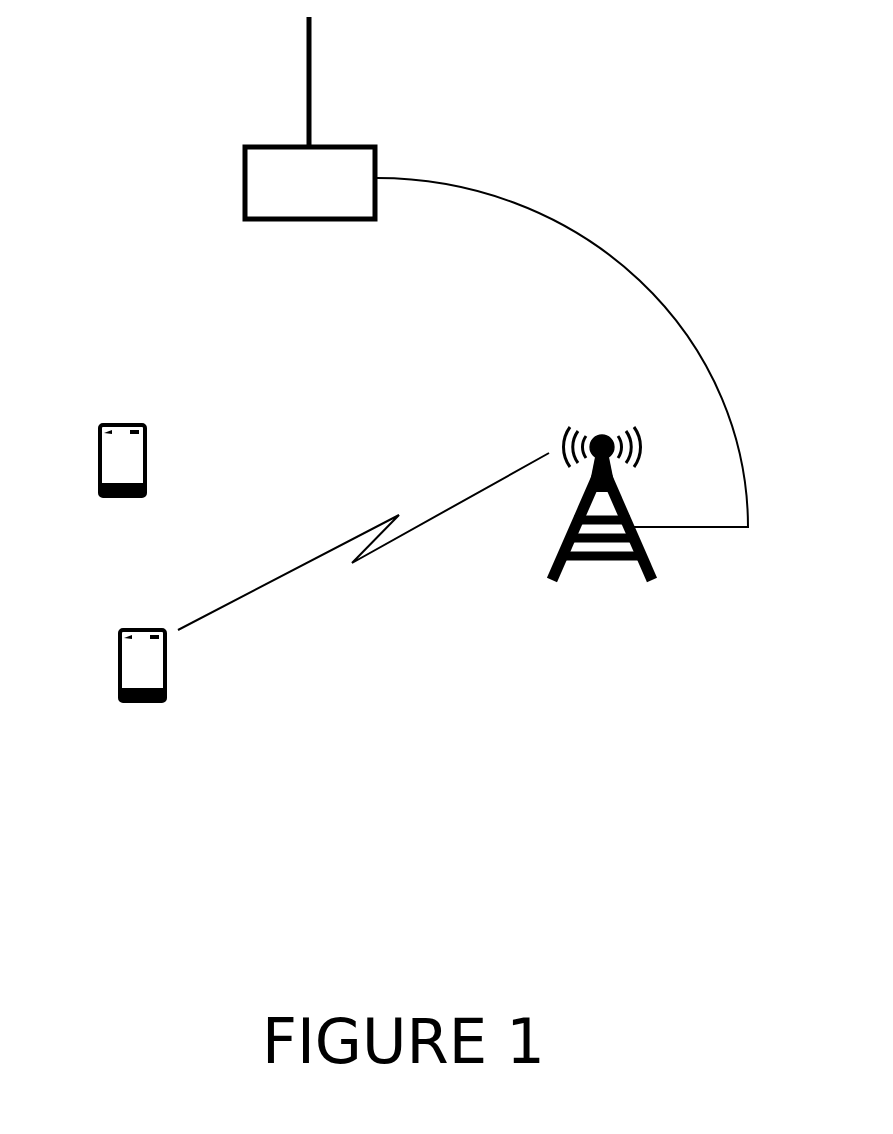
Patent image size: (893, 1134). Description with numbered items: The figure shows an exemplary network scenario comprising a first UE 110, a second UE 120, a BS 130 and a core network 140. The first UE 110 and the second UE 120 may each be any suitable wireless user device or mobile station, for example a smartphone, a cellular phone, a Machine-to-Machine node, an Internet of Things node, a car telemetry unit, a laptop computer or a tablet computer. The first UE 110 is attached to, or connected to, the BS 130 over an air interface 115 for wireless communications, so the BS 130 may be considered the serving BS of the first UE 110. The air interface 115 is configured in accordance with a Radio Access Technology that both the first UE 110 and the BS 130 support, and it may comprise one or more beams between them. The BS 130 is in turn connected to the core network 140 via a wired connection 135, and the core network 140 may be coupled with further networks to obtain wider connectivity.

The first UE 110 is at (167, 690).
The air interface 115 is at (358, 535).
The second UE 120 is at (115, 423).
The BS 130 is at (648, 563).
The wired connection 135 is at (625, 262).
The core network 140 is at (345, 197).